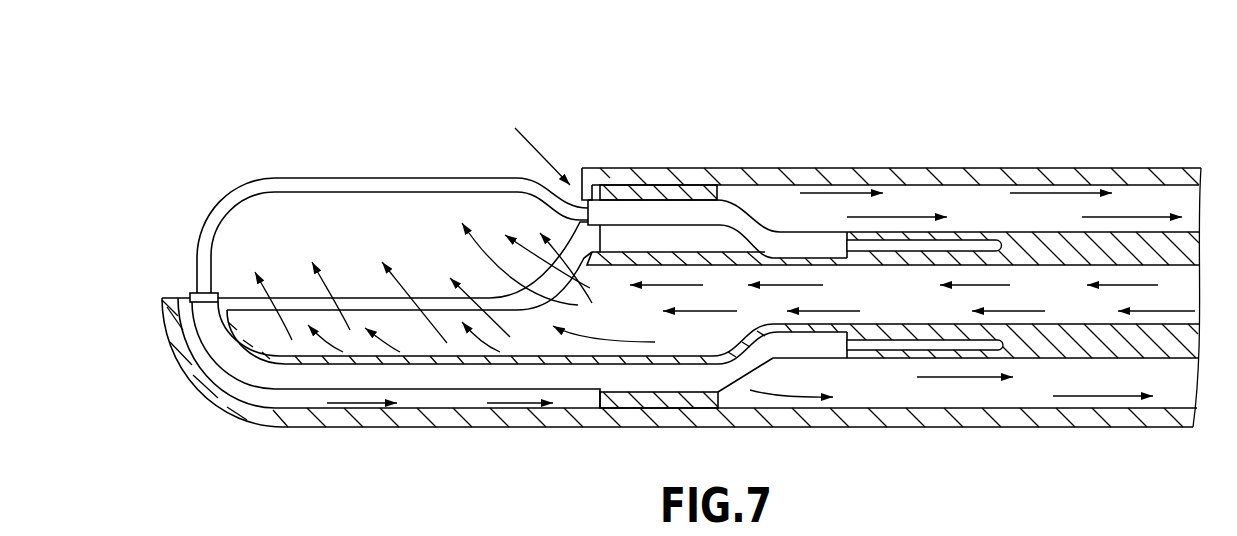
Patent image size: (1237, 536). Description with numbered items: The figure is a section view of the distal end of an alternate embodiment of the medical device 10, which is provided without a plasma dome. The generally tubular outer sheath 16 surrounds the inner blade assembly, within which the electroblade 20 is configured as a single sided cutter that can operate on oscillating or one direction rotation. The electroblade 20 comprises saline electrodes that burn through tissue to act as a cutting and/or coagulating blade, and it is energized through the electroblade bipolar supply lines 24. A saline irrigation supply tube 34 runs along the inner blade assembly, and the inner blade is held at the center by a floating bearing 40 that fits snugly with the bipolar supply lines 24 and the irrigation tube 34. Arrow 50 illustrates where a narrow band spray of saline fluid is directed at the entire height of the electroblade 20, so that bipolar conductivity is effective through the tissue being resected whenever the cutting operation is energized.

The medical device 10 is at (393, 92).
The outer sheath 16 is at (990, 165).
The electroblade 20 is at (330, 177).
The electroblade bipolar supply lines 24 is at (790, 243).
The saline irrigation supply tube 34 is at (1057, 326).
The floating bearing 40 is at (685, 192).
The arrow 50 is at (405, 330).